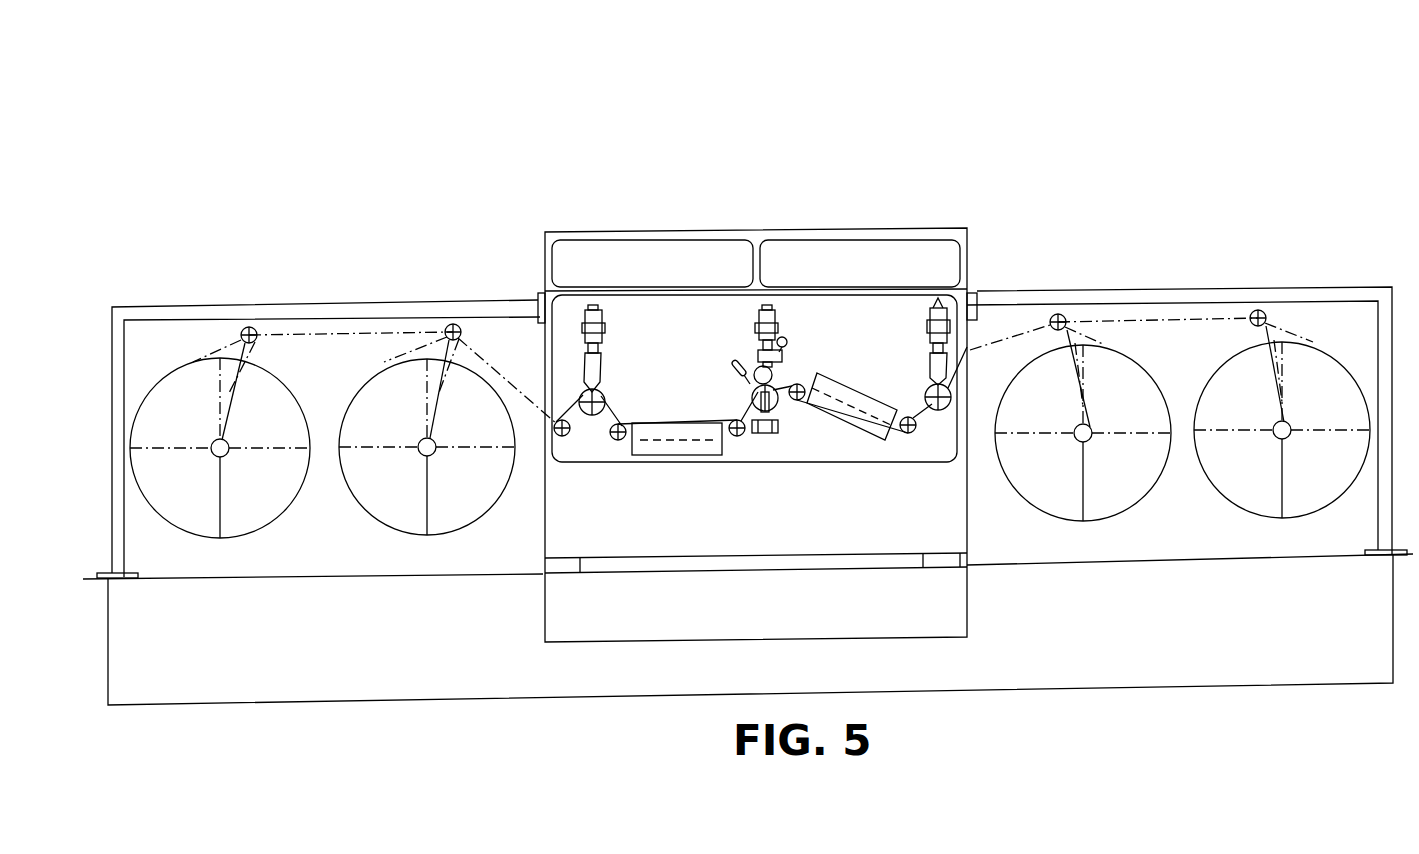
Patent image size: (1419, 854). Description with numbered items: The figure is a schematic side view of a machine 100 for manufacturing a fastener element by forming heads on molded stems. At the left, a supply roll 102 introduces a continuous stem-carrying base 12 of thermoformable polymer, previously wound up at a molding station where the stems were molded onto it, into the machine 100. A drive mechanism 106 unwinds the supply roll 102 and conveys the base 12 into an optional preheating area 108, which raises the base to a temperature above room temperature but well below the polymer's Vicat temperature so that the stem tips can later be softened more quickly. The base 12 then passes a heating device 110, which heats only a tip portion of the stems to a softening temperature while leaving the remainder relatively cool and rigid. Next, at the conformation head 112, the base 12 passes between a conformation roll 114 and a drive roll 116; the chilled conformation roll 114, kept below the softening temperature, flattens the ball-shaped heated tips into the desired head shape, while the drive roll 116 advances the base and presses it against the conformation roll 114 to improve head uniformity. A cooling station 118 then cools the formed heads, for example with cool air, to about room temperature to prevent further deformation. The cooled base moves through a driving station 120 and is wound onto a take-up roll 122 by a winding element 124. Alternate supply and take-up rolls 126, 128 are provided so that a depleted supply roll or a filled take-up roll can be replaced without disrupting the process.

The machine 100 is at (577, 143).
The supply roll 102 is at (249, 395).
The alternate supply roll 126 is at (383, 402).
The stem-carrying base 12 is at (511, 380).
The drive mechanism 106 is at (597, 308).
The preheating area 108 is at (665, 422).
The heating device 110 is at (742, 362).
The conformation head 112 is at (787, 313).
The conformation roll 114 is at (782, 362).
The drive roll 116 is at (778, 405).
The cooling station 118 is at (853, 387).
The driving station 120 is at (967, 343).
The take-up roll 122 is at (1105, 345).
The winding element 124 is at (1093, 427).
The alternate take-up roll 128 is at (1327, 375).